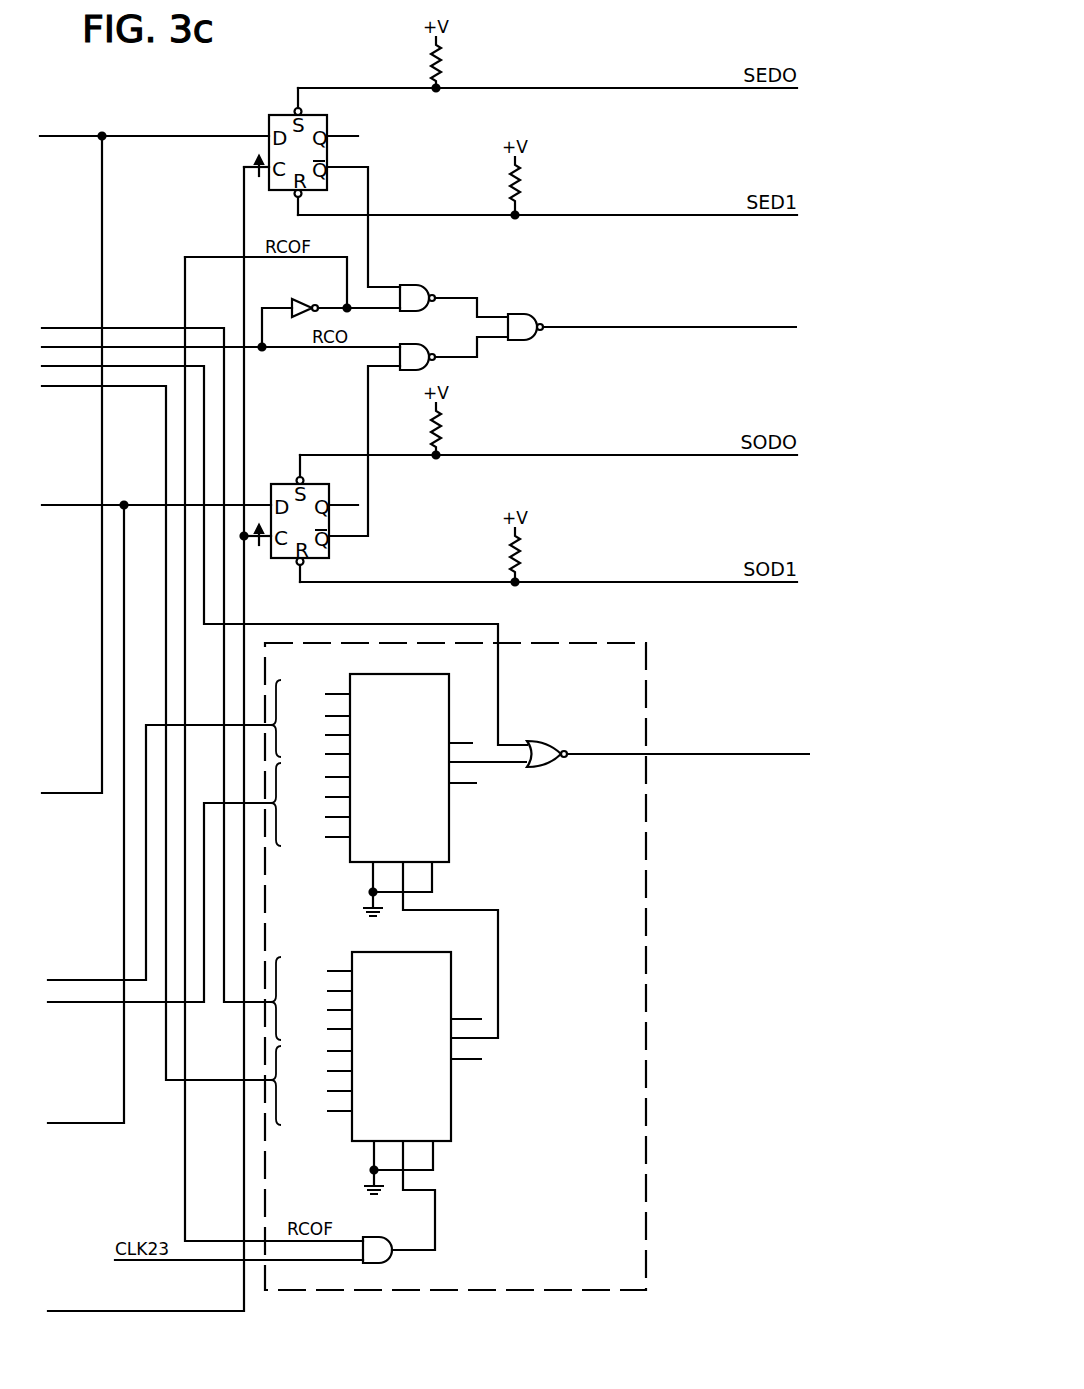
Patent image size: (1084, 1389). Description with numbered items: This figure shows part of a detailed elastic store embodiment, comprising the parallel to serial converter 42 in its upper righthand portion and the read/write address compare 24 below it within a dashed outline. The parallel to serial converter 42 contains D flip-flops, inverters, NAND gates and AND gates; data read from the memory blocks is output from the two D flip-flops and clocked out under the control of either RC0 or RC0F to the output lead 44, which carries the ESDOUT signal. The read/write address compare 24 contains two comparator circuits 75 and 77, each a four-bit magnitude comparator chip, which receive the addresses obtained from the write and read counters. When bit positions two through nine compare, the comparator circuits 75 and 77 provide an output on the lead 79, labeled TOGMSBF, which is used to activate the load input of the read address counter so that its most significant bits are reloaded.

The read/write address compare 24 is at (663, 972).
The parallel to serial converter 42 is at (543, 285).
The output lead 44 is at (700, 328).
The comparator circuit 75 is at (431, 808).
The comparator circuit 77 is at (431, 1082).
The lead 79 is at (700, 756).